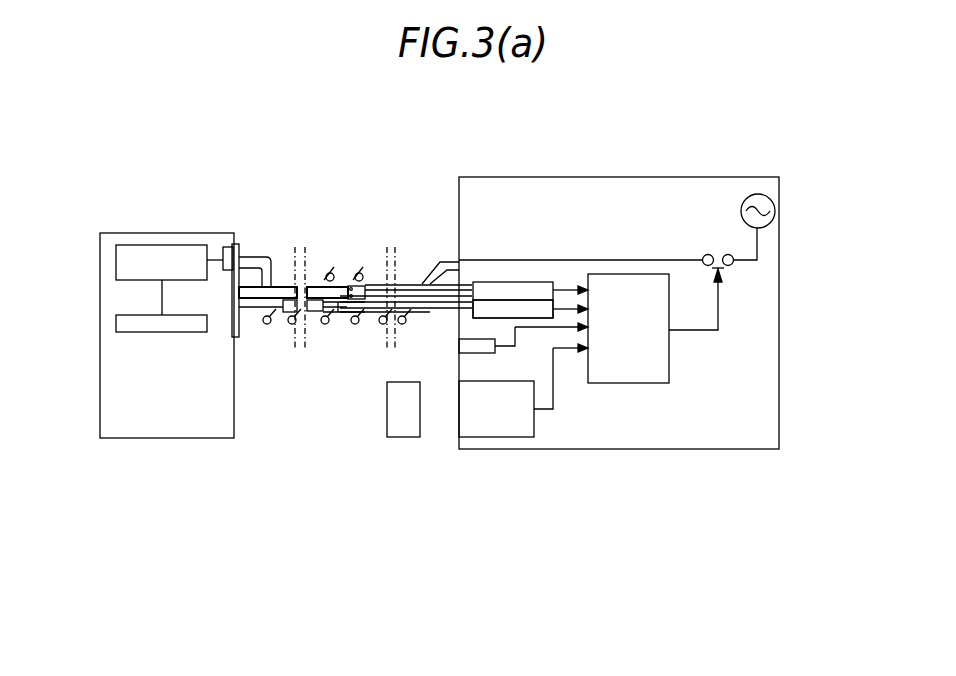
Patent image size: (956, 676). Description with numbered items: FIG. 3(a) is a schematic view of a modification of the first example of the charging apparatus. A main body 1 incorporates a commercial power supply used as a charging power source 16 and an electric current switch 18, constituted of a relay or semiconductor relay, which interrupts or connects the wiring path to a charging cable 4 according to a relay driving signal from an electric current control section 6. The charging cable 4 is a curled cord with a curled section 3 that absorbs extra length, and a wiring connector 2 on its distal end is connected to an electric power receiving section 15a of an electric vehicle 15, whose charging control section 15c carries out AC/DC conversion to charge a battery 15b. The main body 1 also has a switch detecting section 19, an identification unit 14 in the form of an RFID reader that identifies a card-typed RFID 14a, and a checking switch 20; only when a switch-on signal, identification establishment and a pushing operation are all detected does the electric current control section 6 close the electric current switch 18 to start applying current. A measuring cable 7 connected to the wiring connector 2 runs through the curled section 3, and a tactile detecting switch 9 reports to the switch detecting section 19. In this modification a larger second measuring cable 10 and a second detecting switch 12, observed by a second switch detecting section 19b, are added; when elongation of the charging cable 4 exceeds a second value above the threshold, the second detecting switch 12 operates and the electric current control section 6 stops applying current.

The main body 1 is at (723, 440).
The wiring connector 2 is at (239, 337).
The curled section 3 is at (328, 349).
The charging cable 4 is at (330, 273).
The electric current control section 6 is at (660, 371).
The measuring cable 7 is at (248, 290).
The detecting switch 9 is at (342, 282).
The second measuring cable 10 is at (271, 326).
The second detecting switch 12 is at (341, 314).
The identification unit 14 is at (493, 428).
The card-typed RFID 14a is at (402, 430).
The electric vehicle 15 is at (136, 432).
The electric power receiving section 15a is at (225, 249).
The battery 15b is at (128, 327).
The charging control section 15c is at (127, 256).
The charging power source 16 is at (772, 199).
The electric current switch 18 is at (720, 253).
The switch detecting section 19 is at (486, 287).
The second switch detecting section 19b is at (528, 310).
The checking switch 20 is at (458, 353).